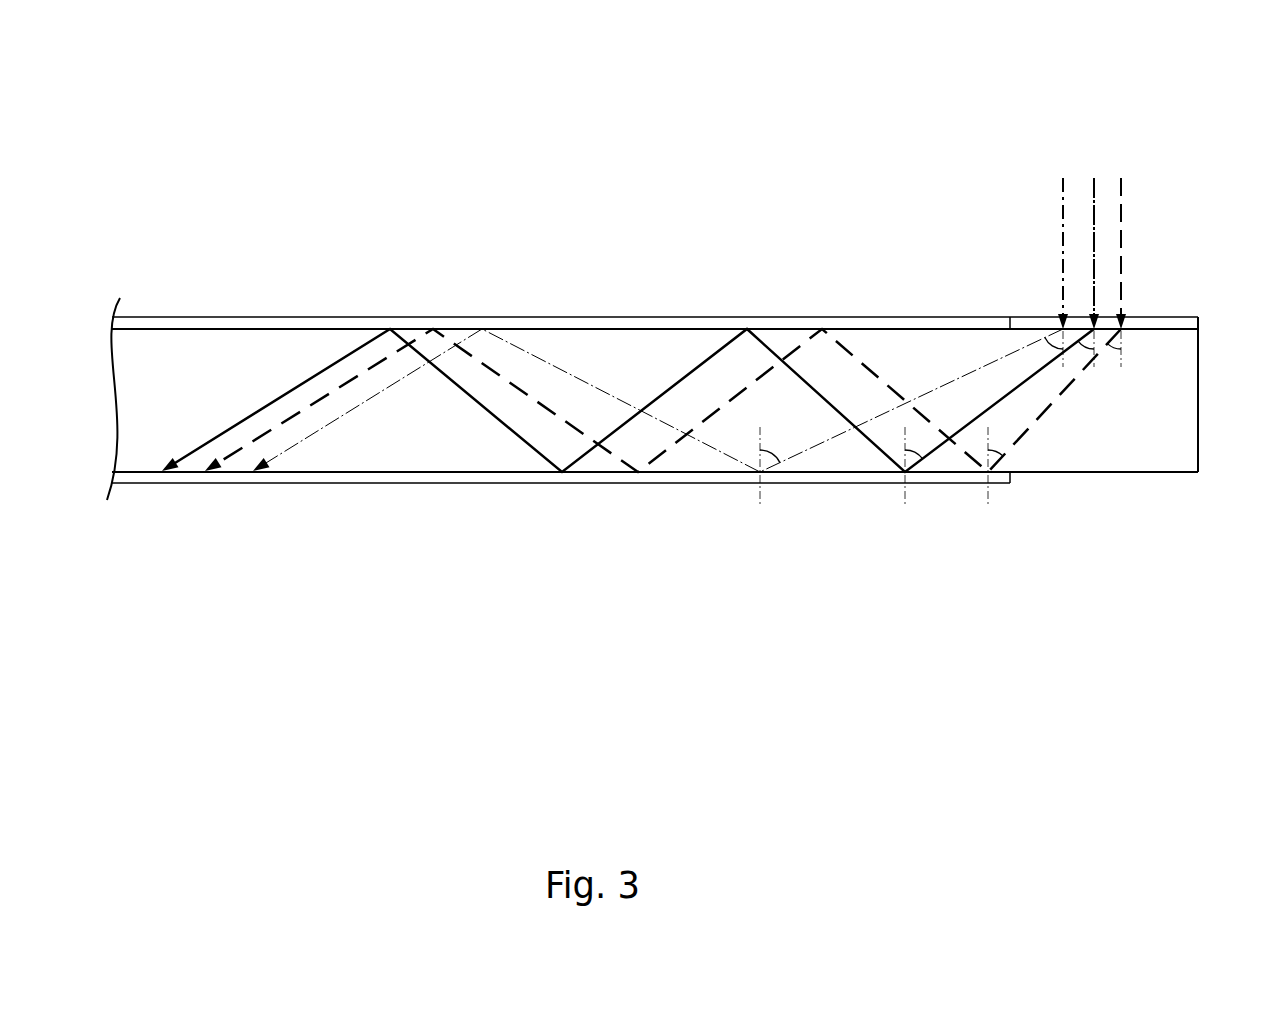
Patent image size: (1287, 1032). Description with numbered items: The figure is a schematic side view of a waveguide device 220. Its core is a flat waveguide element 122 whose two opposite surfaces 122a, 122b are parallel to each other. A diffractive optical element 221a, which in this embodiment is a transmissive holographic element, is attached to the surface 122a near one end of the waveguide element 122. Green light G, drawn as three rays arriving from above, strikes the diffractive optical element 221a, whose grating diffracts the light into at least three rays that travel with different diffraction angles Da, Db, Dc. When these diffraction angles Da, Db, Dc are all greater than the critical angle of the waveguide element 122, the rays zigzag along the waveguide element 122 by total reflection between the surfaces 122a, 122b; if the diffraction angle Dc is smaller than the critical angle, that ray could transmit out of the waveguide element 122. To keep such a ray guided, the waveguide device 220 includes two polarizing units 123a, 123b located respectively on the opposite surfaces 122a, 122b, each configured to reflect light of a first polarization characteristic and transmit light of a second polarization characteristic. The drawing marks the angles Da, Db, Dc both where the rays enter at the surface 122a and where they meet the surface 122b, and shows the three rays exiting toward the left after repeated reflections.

The waveguide device 220 is at (100, 64).
The waveguide element 122 is at (1167, 402).
The surface 122a is at (220, 330).
The surface 122b is at (317, 470).
The polarizing unit 123a is at (560, 325).
The polarizing unit 123b is at (453, 475).
The diffractive optical element 221a is at (1168, 323).
The green light G is at (1092, 206).
The diffraction angle Da is at (775, 457).
The diffraction angle Db is at (913, 447).
The diffraction angle Dc is at (993, 452).